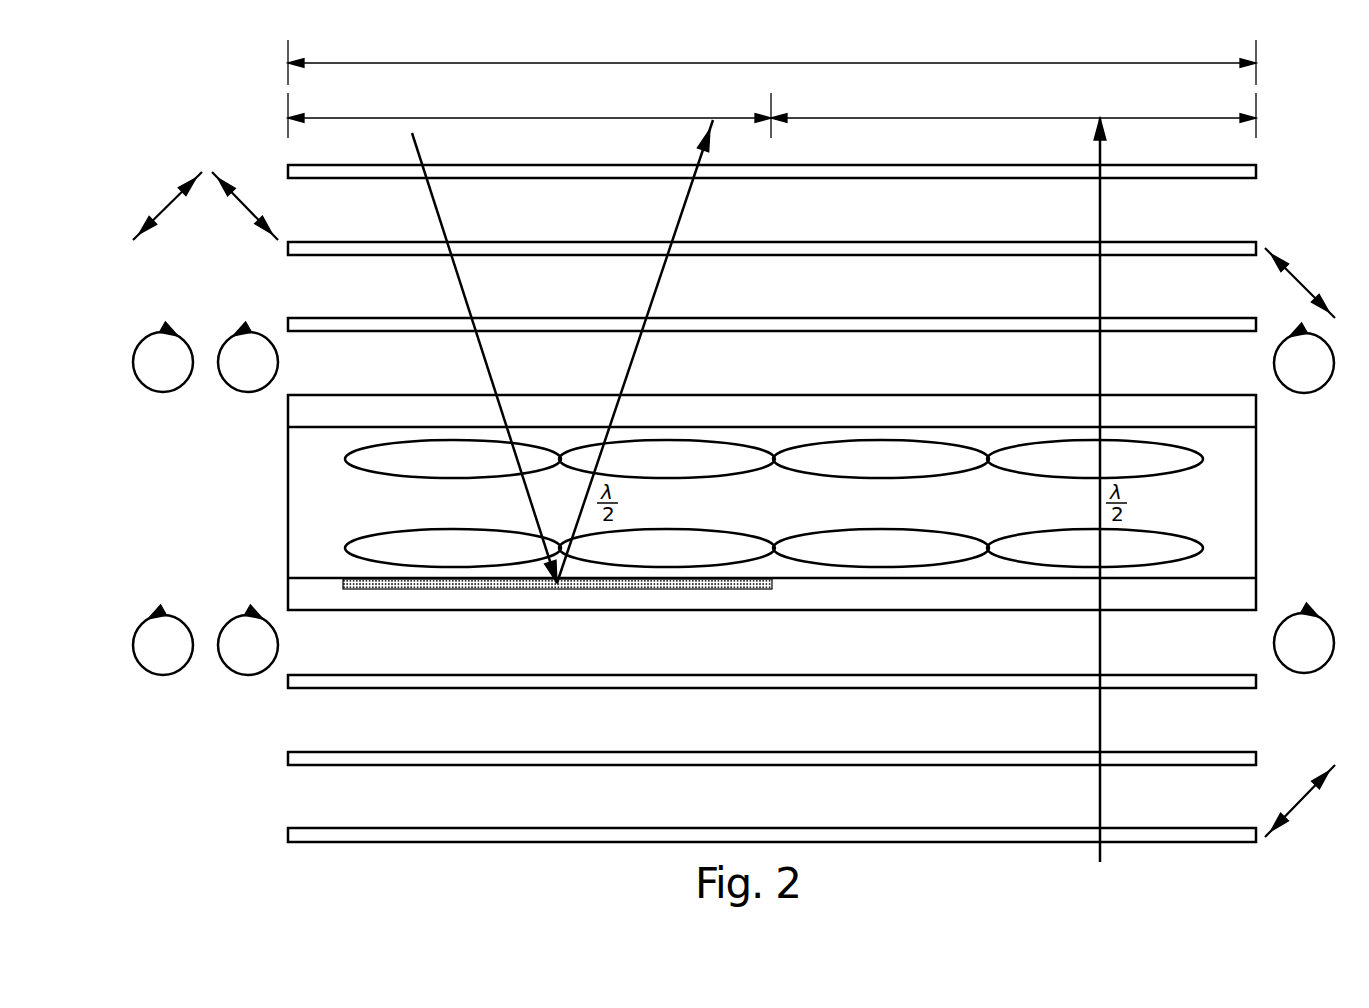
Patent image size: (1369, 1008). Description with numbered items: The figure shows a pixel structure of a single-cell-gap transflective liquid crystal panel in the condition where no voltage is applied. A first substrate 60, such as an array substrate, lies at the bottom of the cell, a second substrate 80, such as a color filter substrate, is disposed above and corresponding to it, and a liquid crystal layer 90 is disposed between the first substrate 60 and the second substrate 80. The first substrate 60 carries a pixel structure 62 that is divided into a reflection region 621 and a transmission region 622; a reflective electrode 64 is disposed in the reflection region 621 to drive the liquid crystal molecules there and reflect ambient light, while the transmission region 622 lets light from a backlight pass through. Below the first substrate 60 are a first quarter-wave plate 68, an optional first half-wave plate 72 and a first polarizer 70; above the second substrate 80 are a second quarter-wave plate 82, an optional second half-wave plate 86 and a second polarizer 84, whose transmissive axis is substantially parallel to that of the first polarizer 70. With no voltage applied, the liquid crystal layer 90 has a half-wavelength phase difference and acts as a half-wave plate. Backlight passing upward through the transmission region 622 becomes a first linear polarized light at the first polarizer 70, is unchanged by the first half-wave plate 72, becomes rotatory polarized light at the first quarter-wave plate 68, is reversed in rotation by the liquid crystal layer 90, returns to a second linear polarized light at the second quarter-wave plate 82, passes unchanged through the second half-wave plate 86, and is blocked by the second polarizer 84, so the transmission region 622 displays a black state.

The first substrate 60 is at (1242, 596).
The pixel structure 62 is at (772, 58).
The reflection region 621 is at (529, 112).
The transmission region 622 is at (1013, 112).
The reflective electrode 64 is at (357, 580).
The first quarter-wave plate 68 is at (1188, 673).
The first polarizer 70 is at (1188, 826).
The first half-wave plate 72 is at (1188, 750).
The second substrate 80 is at (1188, 393).
The second quarter-wave plate 82 is at (1188, 317).
The second polarizer 84 is at (1258, 170).
The second half-wave plate 86 is at (1188, 241).
The liquid crystal layer 90 is at (1238, 503).